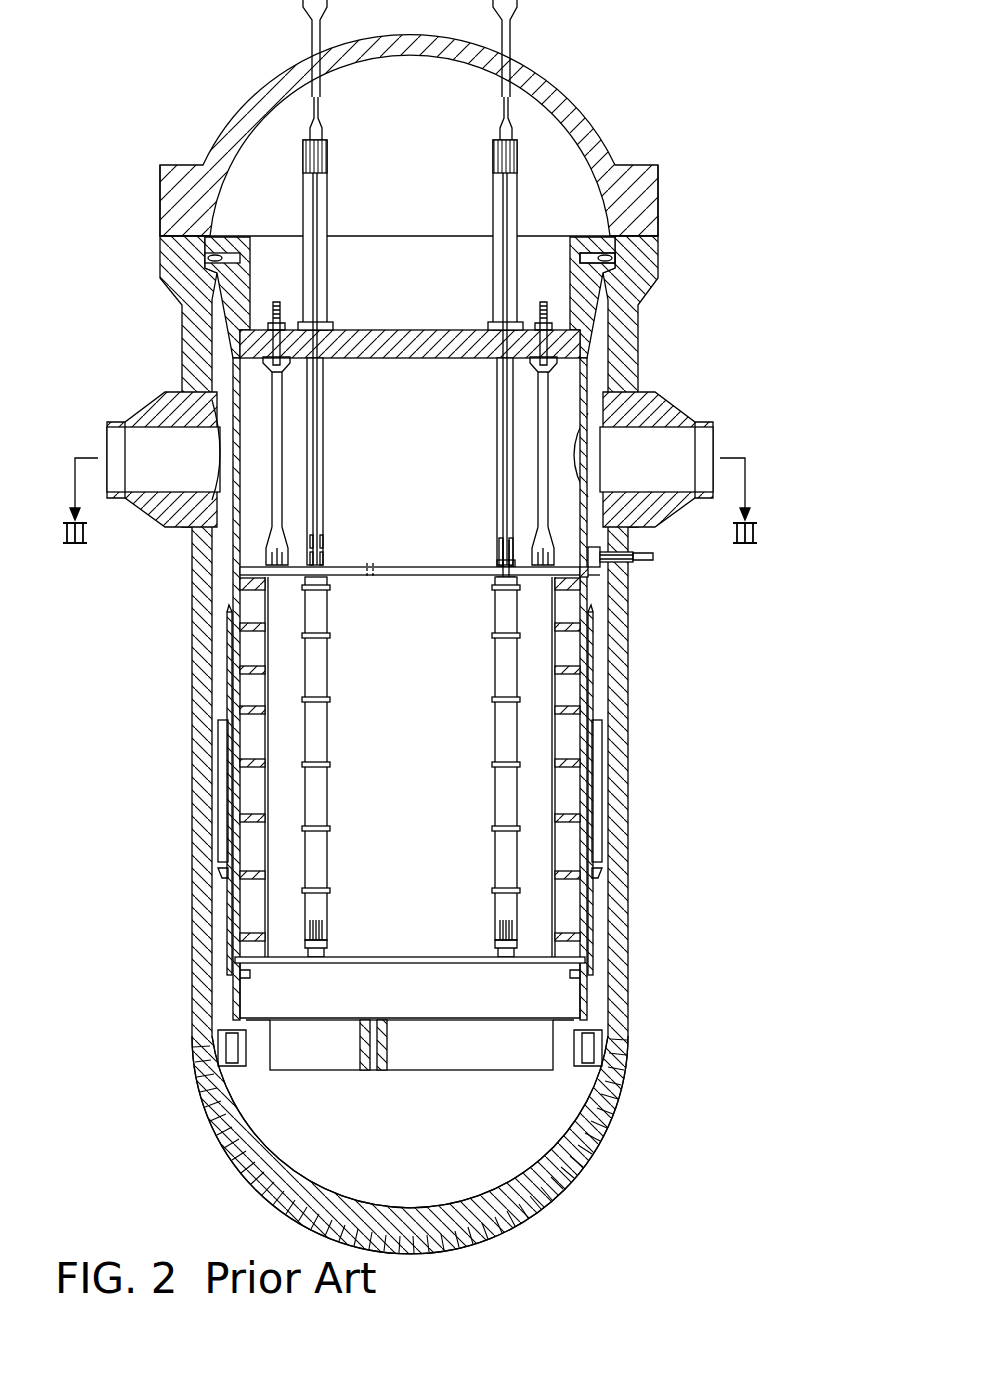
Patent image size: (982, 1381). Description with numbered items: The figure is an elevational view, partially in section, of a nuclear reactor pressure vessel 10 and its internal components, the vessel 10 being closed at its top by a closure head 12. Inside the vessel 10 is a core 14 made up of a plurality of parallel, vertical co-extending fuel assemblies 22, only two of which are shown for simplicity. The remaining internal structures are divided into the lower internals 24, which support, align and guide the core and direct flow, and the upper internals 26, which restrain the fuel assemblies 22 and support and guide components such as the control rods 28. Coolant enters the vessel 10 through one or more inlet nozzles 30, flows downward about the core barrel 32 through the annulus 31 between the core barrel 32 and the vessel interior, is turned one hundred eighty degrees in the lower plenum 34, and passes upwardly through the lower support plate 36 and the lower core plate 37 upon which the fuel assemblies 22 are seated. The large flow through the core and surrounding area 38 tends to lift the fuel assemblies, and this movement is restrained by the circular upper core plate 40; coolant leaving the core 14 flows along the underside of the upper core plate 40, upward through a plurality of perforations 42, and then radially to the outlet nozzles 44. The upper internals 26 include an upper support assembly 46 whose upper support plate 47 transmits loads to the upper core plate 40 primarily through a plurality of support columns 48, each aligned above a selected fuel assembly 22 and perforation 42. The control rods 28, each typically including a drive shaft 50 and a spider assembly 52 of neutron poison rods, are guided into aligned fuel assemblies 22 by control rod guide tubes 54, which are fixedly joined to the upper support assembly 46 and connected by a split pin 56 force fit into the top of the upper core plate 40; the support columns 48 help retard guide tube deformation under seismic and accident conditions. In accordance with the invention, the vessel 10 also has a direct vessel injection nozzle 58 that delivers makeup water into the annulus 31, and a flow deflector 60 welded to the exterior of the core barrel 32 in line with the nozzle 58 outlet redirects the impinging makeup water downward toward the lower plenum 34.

The reactor pressure vessel 10 is at (628, 642).
The closure head 12 is at (660, 204).
The core 14 is at (397, 761).
The fuel assemblies 22 is at (327, 672).
The lower internals 24 is at (397, 1005).
The upper internals 26 is at (399, 436).
The control rods 28 is at (498, 571).
The inlet nozzles 30 is at (144, 405).
The annulus 31 is at (225, 594).
The core barrel 32 is at (233, 566).
The lower plenum 34 is at (573, 1121).
The lower support plate 36 is at (472, 1068).
The lower core plate 37 is at (473, 957).
The surrounding area 38 is at (576, 697).
The upper core plate 40 is at (407, 574).
The perforations 42 is at (372, 565).
The outlet nozzles 44 is at (672, 393).
The upper support assembly 46 is at (580, 224).
The upper support plate 47 is at (404, 330).
The support columns 48 is at (282, 456).
The drive shaft 50 is at (503, 540).
The spider assembly 52 is at (495, 606).
The control rod guide tubes 54 is at (323, 402).
The split pin 56 is at (500, 565).
The direct vessel injection nozzle 58 is at (640, 564).
The flow deflector 60 is at (590, 574).